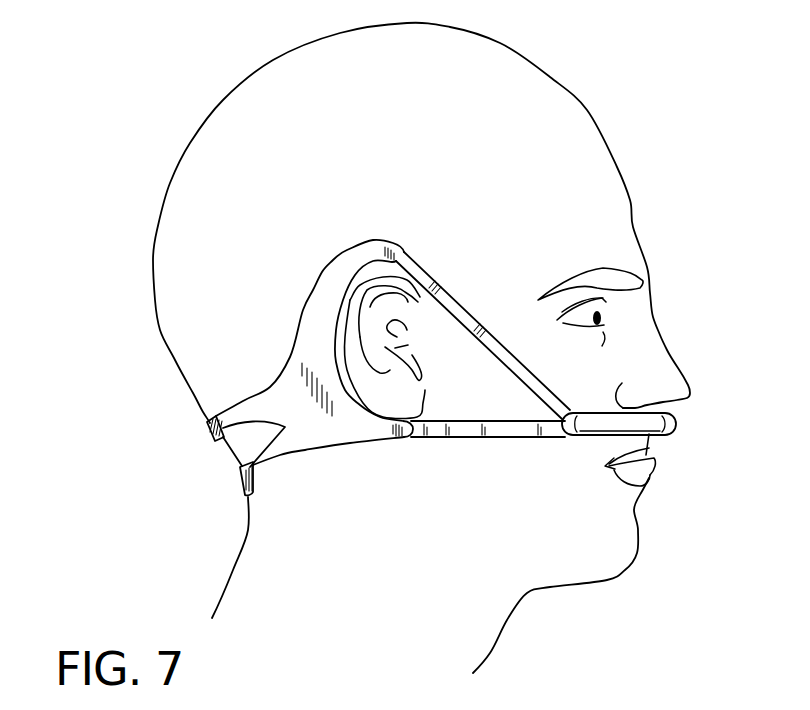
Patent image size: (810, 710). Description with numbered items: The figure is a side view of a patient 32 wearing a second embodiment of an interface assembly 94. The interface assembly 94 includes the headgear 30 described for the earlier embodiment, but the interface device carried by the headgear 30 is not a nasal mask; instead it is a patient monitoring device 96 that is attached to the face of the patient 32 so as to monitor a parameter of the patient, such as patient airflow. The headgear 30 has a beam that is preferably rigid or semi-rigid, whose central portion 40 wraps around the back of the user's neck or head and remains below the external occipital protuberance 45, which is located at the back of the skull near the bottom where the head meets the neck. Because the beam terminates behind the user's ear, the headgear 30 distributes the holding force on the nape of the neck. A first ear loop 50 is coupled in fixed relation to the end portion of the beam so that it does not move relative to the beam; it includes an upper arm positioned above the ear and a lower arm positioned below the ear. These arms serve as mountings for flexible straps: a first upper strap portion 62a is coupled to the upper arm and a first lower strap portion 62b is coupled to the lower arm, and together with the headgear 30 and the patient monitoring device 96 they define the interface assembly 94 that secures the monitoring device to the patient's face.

The headgear 30 is at (351, 473).
The patient 32 is at (177, 202).
The central portion 40 is at (210, 430).
The external occipital protuberance 45 is at (140, 334).
The first ear loop 50 is at (313, 310).
The first upper strap portion 62a is at (453, 293).
The first lower strap portion 62b is at (463, 437).
The interface assembly 94 is at (155, 376).
The patient monitoring device 96 is at (677, 422).